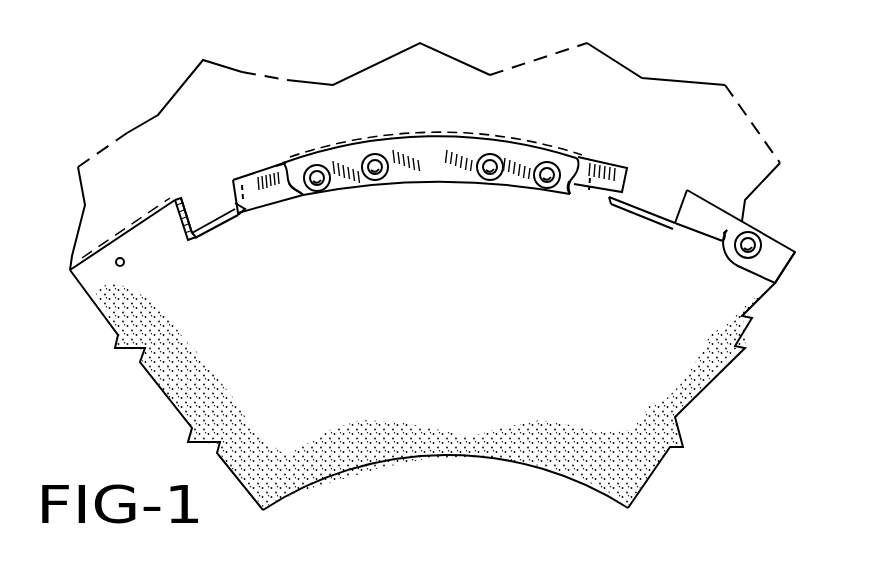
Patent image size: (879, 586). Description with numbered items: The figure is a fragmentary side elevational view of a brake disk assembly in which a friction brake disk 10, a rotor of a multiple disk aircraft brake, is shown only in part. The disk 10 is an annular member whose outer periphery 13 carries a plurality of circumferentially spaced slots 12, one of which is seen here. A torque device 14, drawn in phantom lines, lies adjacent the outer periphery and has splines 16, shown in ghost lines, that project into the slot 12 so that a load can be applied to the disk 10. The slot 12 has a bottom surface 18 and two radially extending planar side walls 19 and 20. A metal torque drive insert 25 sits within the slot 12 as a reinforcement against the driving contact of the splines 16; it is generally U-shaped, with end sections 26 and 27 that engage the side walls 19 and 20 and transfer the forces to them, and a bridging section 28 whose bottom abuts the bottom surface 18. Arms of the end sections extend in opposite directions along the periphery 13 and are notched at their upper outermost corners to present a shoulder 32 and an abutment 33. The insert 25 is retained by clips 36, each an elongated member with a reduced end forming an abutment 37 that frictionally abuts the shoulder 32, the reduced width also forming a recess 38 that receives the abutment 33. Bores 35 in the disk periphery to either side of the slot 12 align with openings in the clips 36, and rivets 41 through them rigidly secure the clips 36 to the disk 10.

The friction brake disk 10 is at (468, 457).
The slot 12 is at (217, 196).
The outer periphery 13 is at (462, 142).
The torque device 14 is at (375, 103).
The spline 16 is at (210, 214).
The bottom surface 18 is at (198, 228).
The side wall 19 is at (175, 200).
The side wall 20 is at (232, 180).
The torque drive insert 25 is at (635, 173).
The end section 26 is at (203, 222).
The end section 27 is at (240, 216).
The bridging section 28 is at (658, 225).
The shoulder 32 is at (288, 165).
The abutment 33 is at (290, 192).
The bore 35 is at (124, 265).
The clip 36 is at (393, 150).
The abutment 37 is at (293, 173).
The recess 38 is at (568, 187).
The rivet 41 is at (375, 172).